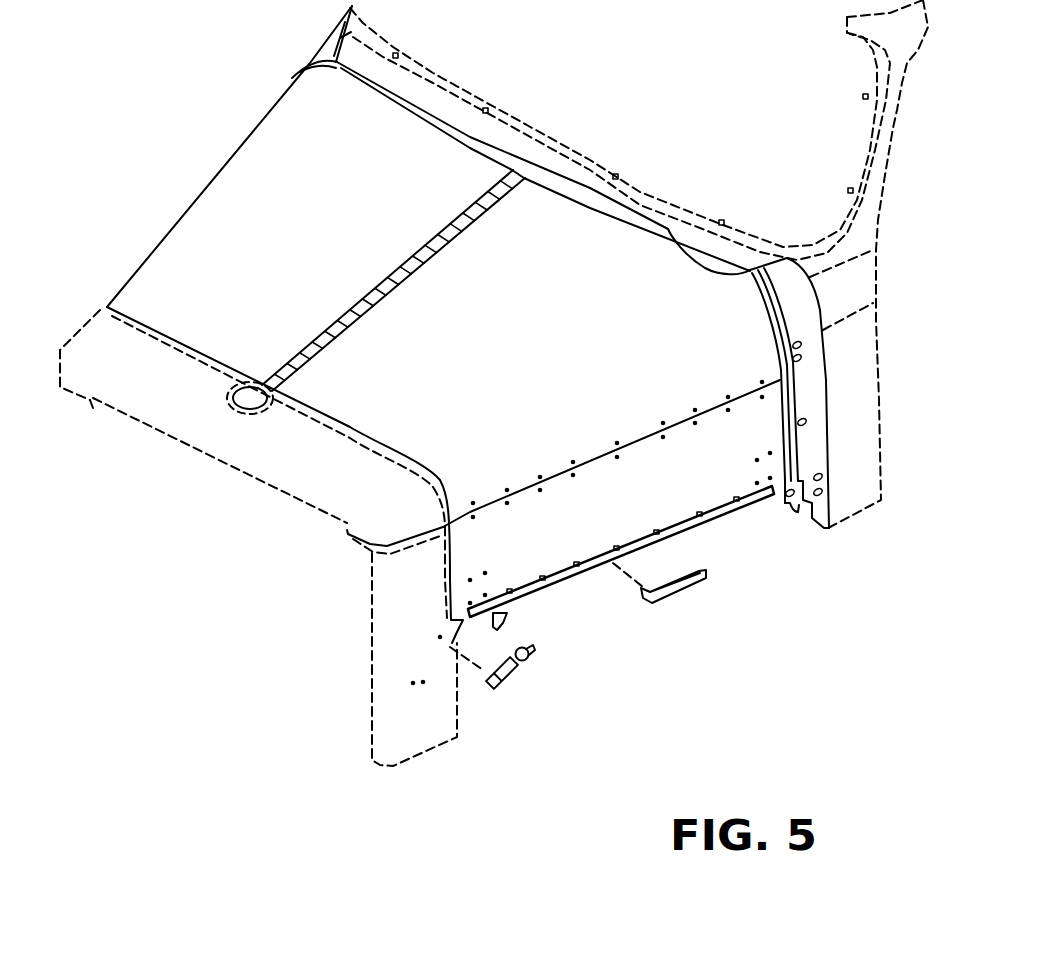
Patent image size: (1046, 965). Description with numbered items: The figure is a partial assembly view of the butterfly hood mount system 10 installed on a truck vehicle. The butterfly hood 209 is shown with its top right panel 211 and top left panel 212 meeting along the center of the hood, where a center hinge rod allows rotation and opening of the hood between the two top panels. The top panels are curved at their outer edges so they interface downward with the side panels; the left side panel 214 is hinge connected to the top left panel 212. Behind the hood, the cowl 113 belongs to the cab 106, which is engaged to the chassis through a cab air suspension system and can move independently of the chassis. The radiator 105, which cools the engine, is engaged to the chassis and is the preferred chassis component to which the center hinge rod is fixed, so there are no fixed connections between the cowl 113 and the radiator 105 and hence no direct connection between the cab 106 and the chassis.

The butterfly hood mount system 10 is at (648, 669).
The radiator 105 is at (436, 705).
The cab 106 is at (887, 148).
The cowl 113 is at (789, 287).
The butterfly hood 209 is at (207, 228).
The top right panel 211 is at (266, 152).
The top left panel 212 is at (553, 253).
The left side panel 214 is at (706, 478).